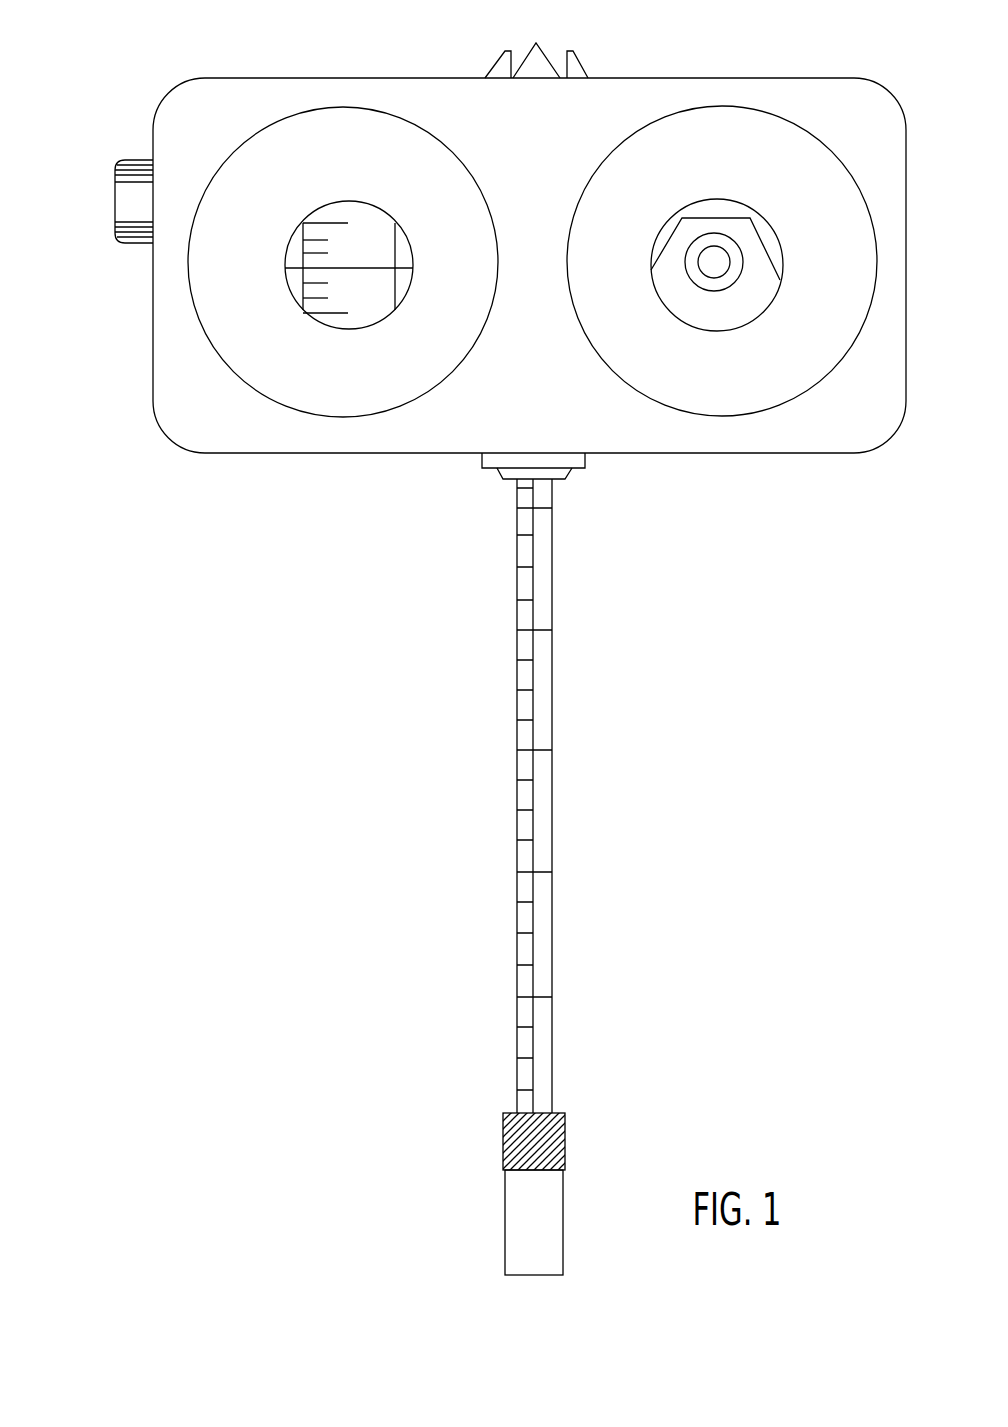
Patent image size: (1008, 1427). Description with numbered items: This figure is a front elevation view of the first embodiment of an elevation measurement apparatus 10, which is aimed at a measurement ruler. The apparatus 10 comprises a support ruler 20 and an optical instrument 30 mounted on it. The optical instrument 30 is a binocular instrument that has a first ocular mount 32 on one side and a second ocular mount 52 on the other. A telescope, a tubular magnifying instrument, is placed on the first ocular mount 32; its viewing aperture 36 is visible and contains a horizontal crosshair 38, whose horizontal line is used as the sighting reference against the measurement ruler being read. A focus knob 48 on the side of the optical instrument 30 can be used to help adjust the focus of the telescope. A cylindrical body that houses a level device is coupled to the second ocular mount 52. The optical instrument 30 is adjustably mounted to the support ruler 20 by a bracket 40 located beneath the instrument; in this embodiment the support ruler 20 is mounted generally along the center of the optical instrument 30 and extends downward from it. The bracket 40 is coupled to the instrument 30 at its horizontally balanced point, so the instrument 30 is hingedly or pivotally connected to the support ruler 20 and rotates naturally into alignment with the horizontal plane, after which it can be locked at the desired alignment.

The elevation measurement apparatus 10 is at (168, 763).
The support ruler 20 is at (552, 768).
The optical instrument 30 is at (826, 49).
The first ocular mount 32 is at (385, 78).
The viewing aperture 36 is at (373, 325).
The horizontal crosshair 38 is at (287, 267).
The bracket 40 is at (590, 463).
The focus knob 48 is at (115, 192).
The second ocular mount 52 is at (745, 78).